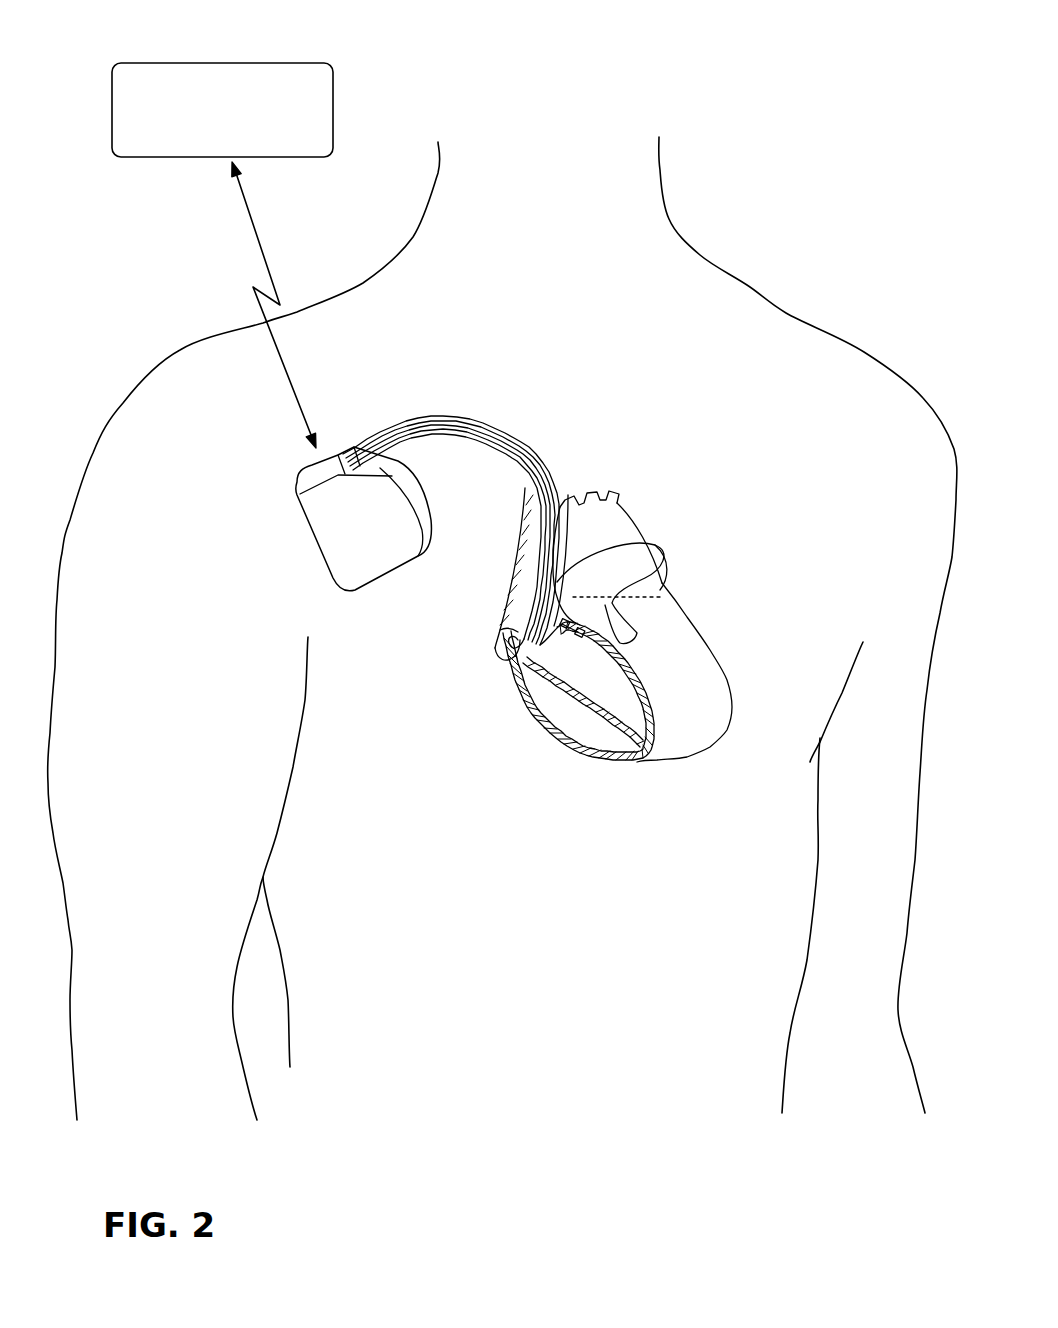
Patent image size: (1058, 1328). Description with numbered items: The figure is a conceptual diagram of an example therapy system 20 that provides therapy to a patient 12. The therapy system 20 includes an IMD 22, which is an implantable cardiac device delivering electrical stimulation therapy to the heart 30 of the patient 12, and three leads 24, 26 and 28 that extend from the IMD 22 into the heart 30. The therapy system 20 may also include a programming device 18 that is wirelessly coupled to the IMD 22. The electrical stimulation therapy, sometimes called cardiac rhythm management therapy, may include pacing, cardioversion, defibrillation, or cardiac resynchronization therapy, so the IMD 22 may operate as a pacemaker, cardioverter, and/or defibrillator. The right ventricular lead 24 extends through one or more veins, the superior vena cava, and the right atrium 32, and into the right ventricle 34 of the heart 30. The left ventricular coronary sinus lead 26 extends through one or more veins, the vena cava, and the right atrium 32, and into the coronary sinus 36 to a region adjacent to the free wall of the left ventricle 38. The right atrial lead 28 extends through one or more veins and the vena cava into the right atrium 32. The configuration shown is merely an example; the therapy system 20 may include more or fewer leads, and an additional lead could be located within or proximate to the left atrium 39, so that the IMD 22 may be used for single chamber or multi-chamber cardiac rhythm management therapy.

The patient 12 is at (788, 313).
The programming device 18 is at (222, 255).
The therapy system 20 is at (765, 76).
The IMD 22 is at (303, 550).
The right ventricular lead 24 is at (493, 443).
The left ventricular coronary sinus lead 26 is at (553, 453).
The right atrial lead 28 is at (510, 477).
The heart 30 is at (672, 783).
The right atrium 32 is at (517, 637).
The right ventricle 34 is at (553, 723).
The coronary sinus 36 is at (558, 580).
The left ventricle 38 is at (703, 683).
The left atrium 39 is at (620, 525).